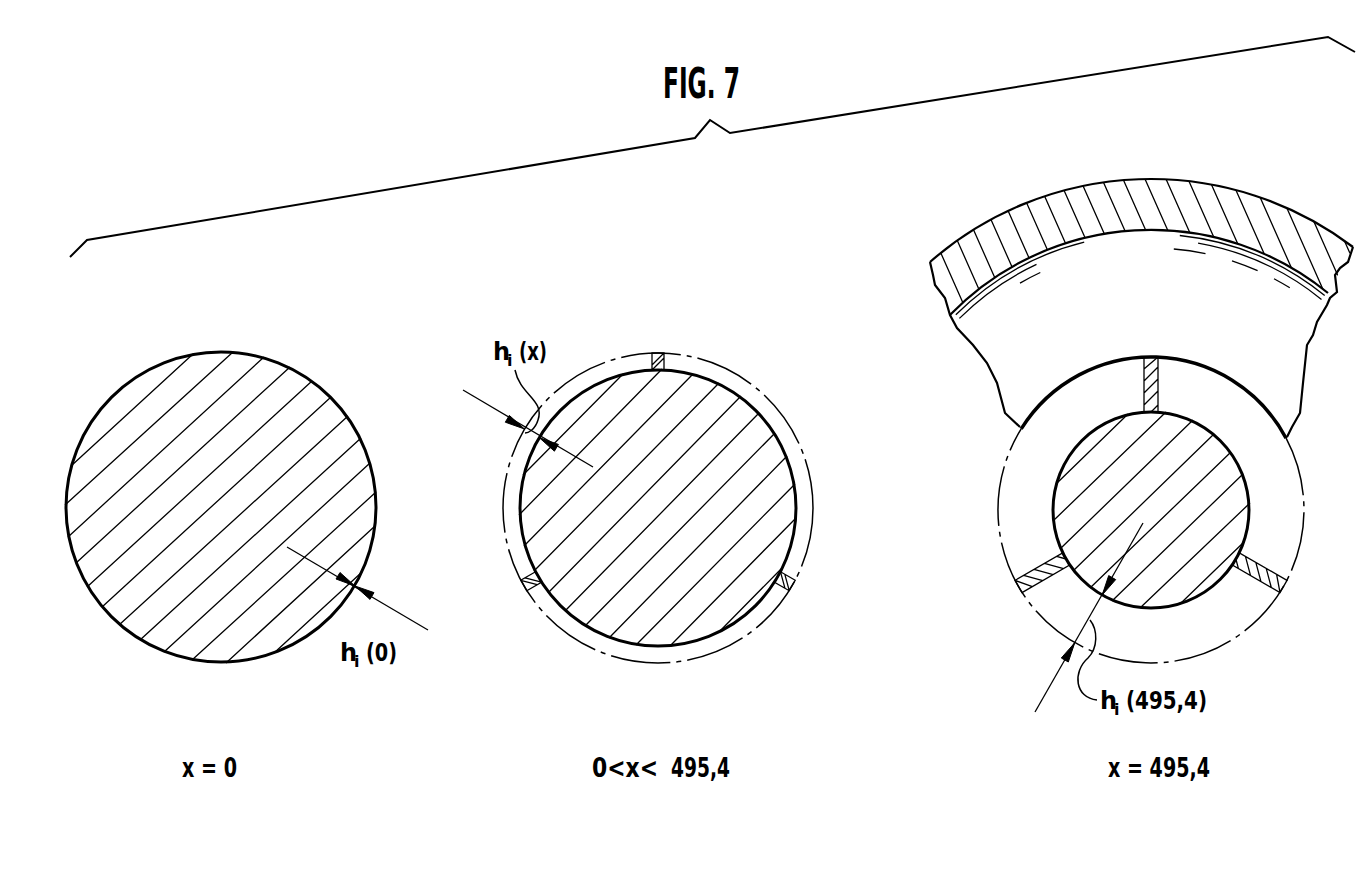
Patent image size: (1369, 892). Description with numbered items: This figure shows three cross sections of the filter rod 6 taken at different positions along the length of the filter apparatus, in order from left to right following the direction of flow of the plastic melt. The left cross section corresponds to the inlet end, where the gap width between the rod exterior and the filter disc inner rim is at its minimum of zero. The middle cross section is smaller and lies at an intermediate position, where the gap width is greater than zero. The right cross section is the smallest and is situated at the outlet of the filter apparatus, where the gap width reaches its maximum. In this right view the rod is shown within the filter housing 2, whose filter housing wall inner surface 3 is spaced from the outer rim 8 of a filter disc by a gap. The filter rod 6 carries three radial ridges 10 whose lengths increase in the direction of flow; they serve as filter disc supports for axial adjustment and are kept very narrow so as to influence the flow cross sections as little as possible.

The filter housing 2 is at (990, 232).
The filter housing wall inner surface 3 is at (1060, 243).
The filter rod 6 is at (283, 373).
The outer rim 8 is at (1225, 238).
The radial ridges 10 is at (657, 352).